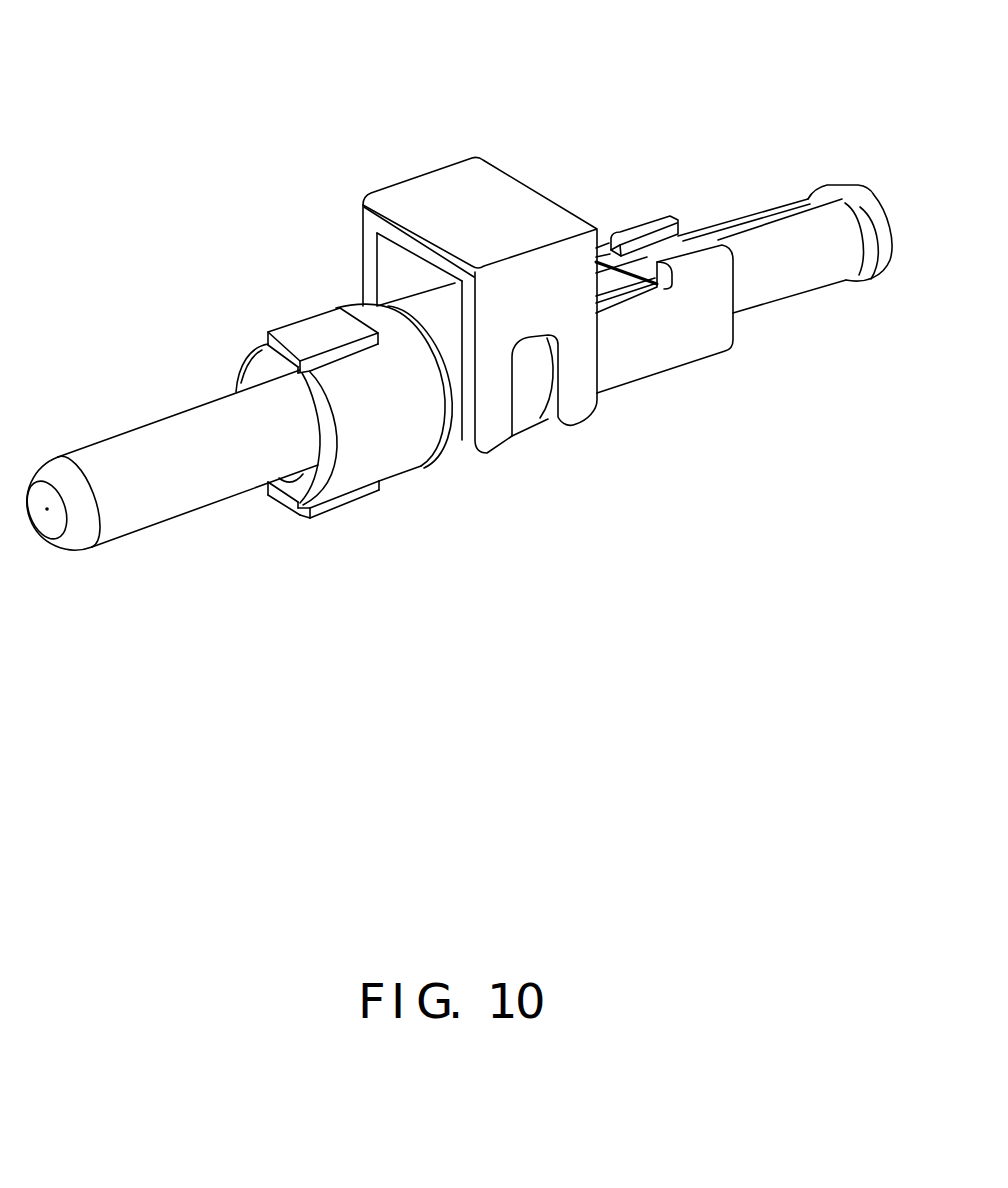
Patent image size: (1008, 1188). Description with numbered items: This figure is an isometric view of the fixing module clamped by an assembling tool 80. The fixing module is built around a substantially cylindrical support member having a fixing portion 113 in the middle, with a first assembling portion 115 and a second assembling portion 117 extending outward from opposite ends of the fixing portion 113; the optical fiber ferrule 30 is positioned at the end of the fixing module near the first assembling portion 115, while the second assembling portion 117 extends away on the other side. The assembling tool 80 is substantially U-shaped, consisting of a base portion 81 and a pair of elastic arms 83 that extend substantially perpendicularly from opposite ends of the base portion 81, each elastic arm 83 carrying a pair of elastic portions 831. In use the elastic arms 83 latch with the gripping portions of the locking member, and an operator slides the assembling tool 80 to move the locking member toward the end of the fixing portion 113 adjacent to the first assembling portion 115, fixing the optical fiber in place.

The optical fiber ferrule 30 is at (145, 488).
The assembling tool 80 is at (543, 249).
The base portion 81 is at (438, 185).
The elastic arm 83 is at (599, 274).
The elastic portion 831 is at (572, 377).
The fixing portion 113 is at (693, 327).
The first assembling portion 115 is at (394, 440).
The second assembling portion 117 is at (787, 265).